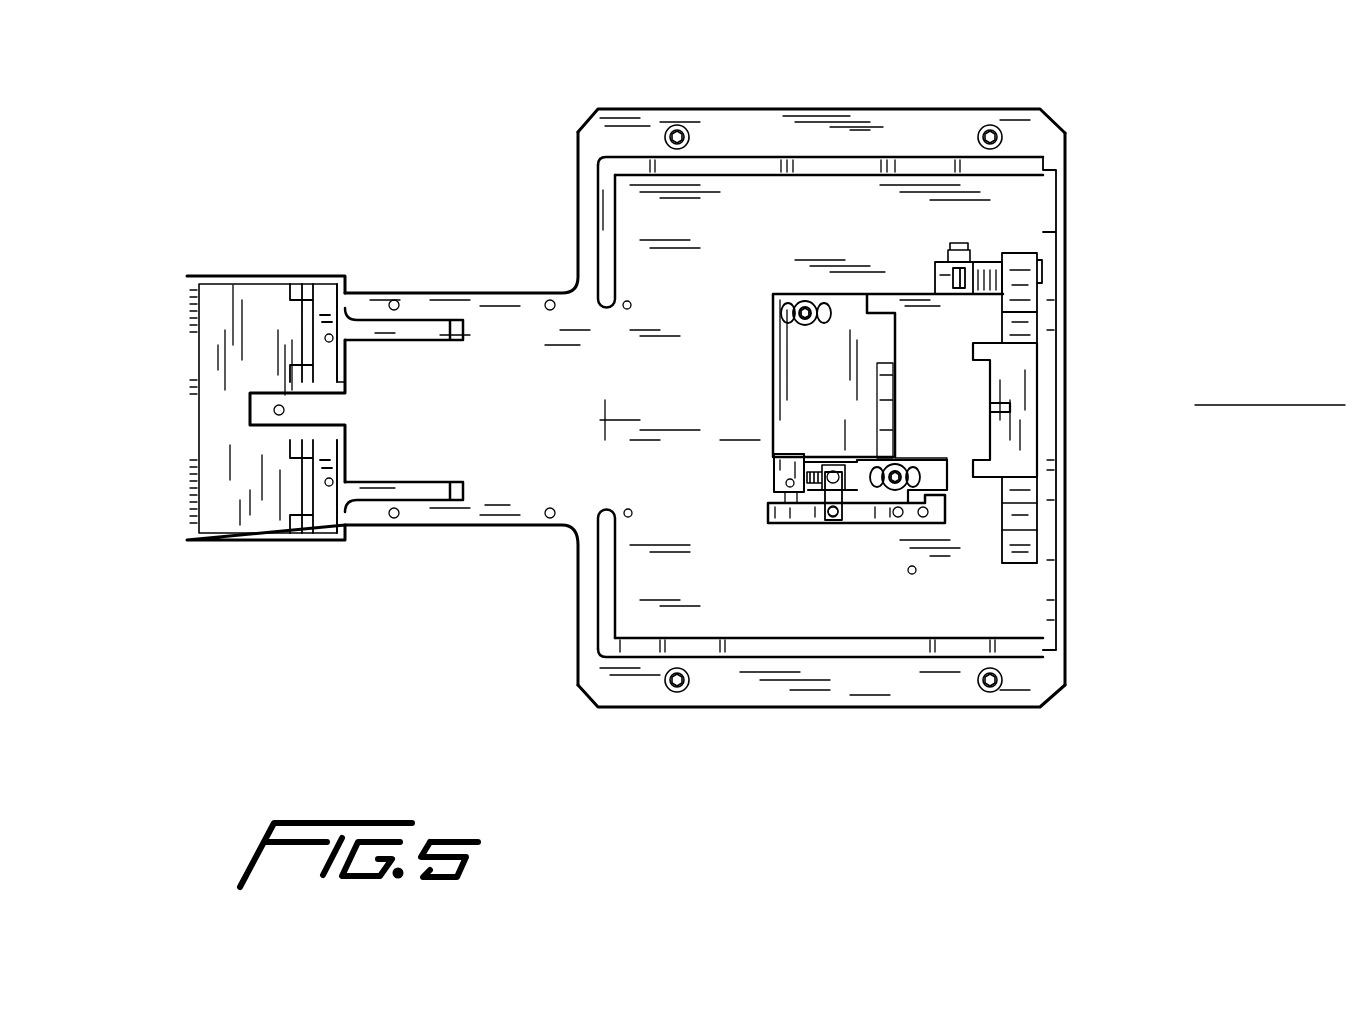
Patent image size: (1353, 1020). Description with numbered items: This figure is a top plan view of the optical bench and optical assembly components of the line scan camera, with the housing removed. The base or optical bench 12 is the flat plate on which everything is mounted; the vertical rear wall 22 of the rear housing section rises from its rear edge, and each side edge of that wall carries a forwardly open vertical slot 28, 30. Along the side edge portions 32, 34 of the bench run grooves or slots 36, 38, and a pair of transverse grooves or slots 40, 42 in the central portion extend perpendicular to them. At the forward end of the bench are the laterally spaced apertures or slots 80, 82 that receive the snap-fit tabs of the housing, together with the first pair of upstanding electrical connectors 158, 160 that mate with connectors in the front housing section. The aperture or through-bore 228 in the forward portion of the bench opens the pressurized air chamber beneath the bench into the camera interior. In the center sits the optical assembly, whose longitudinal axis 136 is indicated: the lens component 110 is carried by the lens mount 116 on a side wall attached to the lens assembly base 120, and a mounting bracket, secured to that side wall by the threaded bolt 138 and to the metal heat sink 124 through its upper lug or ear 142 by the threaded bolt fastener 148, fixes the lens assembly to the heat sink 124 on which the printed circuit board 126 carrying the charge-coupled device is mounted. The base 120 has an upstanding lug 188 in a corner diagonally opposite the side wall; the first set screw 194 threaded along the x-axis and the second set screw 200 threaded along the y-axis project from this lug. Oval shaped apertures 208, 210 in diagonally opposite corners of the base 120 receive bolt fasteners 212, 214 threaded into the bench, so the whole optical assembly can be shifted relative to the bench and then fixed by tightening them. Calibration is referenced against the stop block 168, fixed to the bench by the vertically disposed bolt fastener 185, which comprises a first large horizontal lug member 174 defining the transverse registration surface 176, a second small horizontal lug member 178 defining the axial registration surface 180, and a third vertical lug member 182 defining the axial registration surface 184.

The base or optical bench 12 is at (522, 421).
The vertical rear wall 22 is at (1058, 408).
The forwardly open vertical slot 28 is at (1058, 636).
The forwardly open vertical slot 30 is at (1052, 120).
The side edge portion of the optical bench 32 is at (783, 677).
The side edge portion of the optical bench 34 is at (728, 128).
The groove or slot 36 is at (850, 647).
The groove or slot 38 is at (812, 164).
The transverse groove or slot 40 is at (608, 590).
The transverse groove or slot 42 is at (610, 227).
The aperture or slot 80 is at (422, 492).
The aperture or slot 82 is at (412, 327).
The lens component 110 is at (883, 410).
The lens mount 116 is at (908, 300).
The lens assembly base 120 is at (785, 357).
The metal heat sink 124 is at (1003, 567).
The printed circuit board 126 is at (1037, 495).
The longitudinal axis of the optical assembly 136 is at (1273, 402).
The threaded bolt 138 is at (960, 242).
The upper lug or ear 142 is at (990, 262).
The threaded bolt fastener 148 is at (962, 293).
The upstanding electrical connector 158 is at (325, 513).
The upstanding electrical connector 160 is at (328, 303).
The stop block 168 is at (867, 517).
The first horizontally disposed lug member 174 is at (860, 473).
The first transversely oriented registration surface 176 is at (800, 502).
The second horizontally disposed lug member 178 is at (918, 470).
The second axially oriented registration surface 180 is at (1040, 503).
The third vertically oriented lug member 182 is at (795, 522).
The third axially oriented registration surface 184 is at (773, 490).
The vertically disposed bolt fastener 185 is at (840, 508).
The upstanding lug 188 is at (777, 455).
The first externally threaded set screw 194 is at (813, 455).
The second externally threaded set screw 200 is at (773, 480).
The oval shaped aperture or throughbore 208 is at (918, 467).
The oval shaped aperture or throughbore 210 is at (828, 298).
The bolt fastener 212 is at (900, 463).
The bolt fastener 214 is at (795, 360).
The aperture or through-bore 228 is at (277, 418).